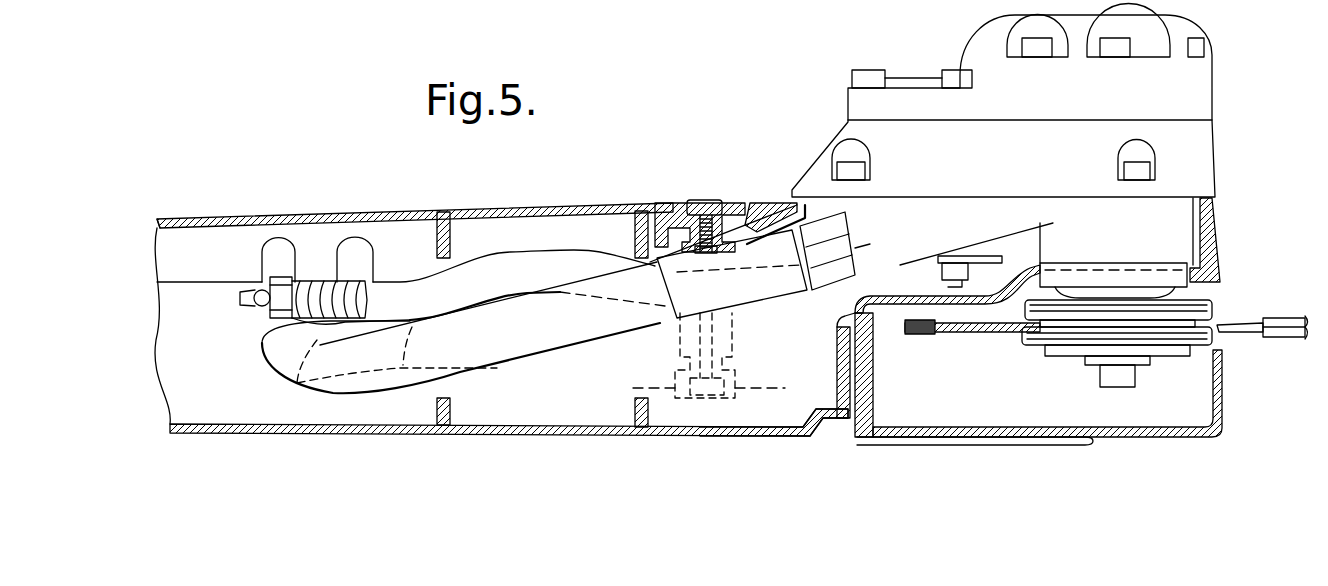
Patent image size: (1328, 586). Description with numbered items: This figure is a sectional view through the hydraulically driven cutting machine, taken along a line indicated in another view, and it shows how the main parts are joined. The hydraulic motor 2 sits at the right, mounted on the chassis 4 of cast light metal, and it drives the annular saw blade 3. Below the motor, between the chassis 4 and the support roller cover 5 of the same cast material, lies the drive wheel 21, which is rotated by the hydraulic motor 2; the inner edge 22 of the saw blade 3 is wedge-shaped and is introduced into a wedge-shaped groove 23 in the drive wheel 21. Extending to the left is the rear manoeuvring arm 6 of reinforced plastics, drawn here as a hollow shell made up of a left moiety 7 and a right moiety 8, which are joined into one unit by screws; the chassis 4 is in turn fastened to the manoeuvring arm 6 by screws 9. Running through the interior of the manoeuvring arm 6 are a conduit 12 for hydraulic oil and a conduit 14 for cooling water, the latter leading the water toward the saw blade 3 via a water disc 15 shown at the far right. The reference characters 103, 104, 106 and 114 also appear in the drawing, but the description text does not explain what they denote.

The hydraulic motor 2 is at (1190, 92).
The saw blade 3 is at (988, 326).
The chassis 4 is at (778, 203).
The support roller cover 5 is at (1154, 437).
The manoeuvring arm 6 is at (350, 205).
The left moiety 7 is at (505, 205).
The right moiety 8 is at (510, 437).
The screws 9 is at (703, 200).
The conduit for hydraulic oil 12 is at (560, 330).
The conduit for cooling water 14 is at (545, 270).
The water disc 15 is at (1282, 318).
The drive wheel 21 is at (1068, 346).
The inner edge 22 is at (1030, 333).
The wedge-shaped groove 23 is at (1155, 328).
The housing bottom wall section 103 is at (795, 438).
The mounting bracket 104 is at (683, 203).
The housing wall 106 is at (873, 366).
The support plate 114 is at (958, 300).